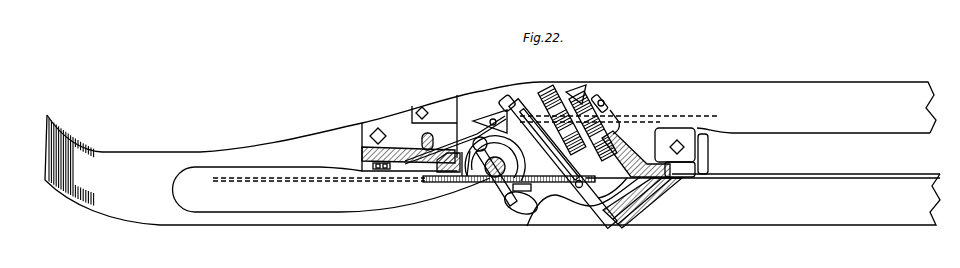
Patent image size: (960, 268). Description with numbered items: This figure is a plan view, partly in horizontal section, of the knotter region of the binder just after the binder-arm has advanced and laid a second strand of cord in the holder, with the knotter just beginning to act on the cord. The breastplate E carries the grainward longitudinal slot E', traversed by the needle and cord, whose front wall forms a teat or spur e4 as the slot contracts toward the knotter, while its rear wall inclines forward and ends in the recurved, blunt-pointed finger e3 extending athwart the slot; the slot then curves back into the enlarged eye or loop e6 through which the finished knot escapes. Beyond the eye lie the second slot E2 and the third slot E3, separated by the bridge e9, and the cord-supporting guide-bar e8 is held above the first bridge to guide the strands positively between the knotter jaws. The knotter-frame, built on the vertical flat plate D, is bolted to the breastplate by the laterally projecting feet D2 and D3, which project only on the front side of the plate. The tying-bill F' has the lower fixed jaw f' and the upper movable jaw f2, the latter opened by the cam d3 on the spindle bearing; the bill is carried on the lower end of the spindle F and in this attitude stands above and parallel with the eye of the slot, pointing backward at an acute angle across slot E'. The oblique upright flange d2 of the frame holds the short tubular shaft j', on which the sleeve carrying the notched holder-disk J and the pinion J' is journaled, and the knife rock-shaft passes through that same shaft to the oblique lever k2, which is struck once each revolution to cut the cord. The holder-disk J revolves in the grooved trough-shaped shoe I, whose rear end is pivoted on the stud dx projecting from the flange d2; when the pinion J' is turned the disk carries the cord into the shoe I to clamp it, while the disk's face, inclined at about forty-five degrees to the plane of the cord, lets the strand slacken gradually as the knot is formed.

The grainward longitudinal slot E' is at (331, 189).
The vertical flat plate D is at (360, 151).
The foot-flange D3 is at (408, 145).
The cam d3 is at (436, 137).
The cord-supporting guide-bar e8 is at (492, 108).
The holder-disk J is at (557, 147).
The pinion J' is at (562, 109).
The short tubular shaft j' is at (591, 111).
The breastplate E is at (612, 99).
The lever k2 is at (610, 103).
The foot-flange D2 is at (676, 138).
The upright flange or lip d2 is at (636, 149).
The bridge e9 is at (708, 154).
The third slot E3 is at (763, 163).
The second slot E2 is at (583, 199).
The teat or spur e4 is at (468, 178).
The blunt-pointed finger e3 is at (481, 186).
The knotter or tying-bill F' is at (496, 187).
The spindle F is at (495, 192).
The lower fixed jaw f' is at (507, 203).
The upper jaw f2 is at (520, 200).
The shoe I is at (584, 192).
The eye or loop e6 is at (524, 188).
The arm or stud dx is at (622, 228).